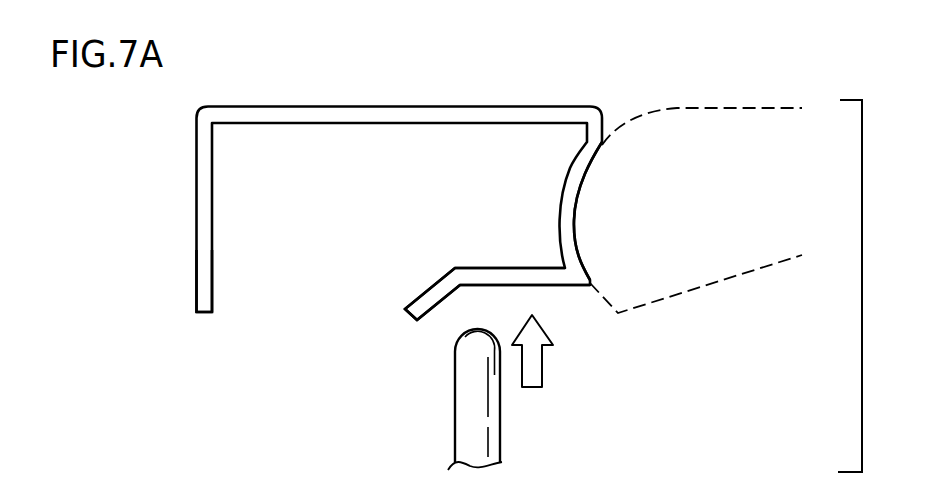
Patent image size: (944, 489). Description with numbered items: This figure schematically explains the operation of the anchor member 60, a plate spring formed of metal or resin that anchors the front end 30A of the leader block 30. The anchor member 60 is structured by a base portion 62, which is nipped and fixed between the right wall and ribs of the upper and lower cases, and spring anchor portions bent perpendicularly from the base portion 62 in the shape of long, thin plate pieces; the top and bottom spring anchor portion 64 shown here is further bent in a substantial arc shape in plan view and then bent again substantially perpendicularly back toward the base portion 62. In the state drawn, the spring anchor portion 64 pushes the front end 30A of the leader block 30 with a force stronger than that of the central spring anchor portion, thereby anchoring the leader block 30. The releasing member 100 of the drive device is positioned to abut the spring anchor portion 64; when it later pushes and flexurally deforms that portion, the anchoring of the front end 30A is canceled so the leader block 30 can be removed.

The anchor member 60 is at (388, 106).
The base portion 62 is at (196, 253).
The spring anchor portion 64 is at (546, 275).
The leader block 30 is at (737, 107).
The front end 30A is at (577, 222).
The releasing member 100 is at (480, 432).